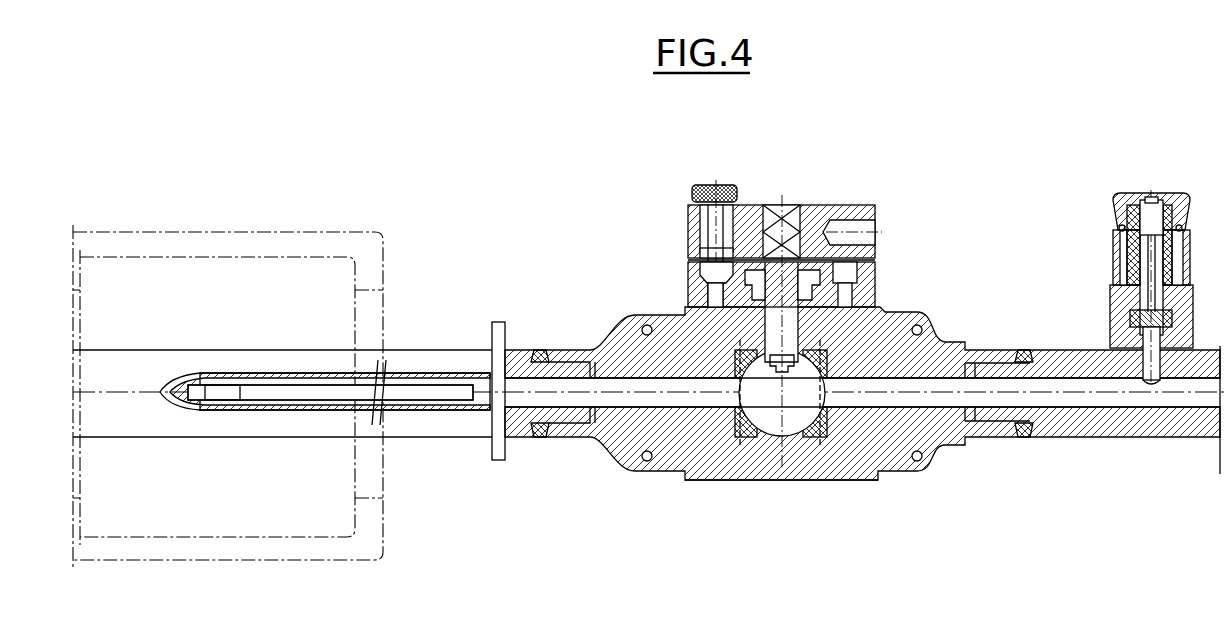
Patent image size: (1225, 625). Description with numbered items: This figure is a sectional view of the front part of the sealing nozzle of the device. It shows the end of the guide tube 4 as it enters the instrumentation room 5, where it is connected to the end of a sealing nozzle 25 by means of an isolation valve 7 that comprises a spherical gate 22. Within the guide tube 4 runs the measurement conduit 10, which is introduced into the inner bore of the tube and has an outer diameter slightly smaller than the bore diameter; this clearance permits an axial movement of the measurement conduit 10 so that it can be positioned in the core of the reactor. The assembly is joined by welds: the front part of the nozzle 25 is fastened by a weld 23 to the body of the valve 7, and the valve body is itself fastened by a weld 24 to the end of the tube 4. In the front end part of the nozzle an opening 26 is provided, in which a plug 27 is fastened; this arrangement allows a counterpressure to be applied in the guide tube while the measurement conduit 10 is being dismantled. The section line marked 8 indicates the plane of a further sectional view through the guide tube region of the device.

The guide tube 4 is at (445, 366).
The instrumentation room 5 is at (862, 412).
The isolation valve 7 is at (700, 486).
The section line 8- 8 is at (433, 230).
The measurement conduit 10 is at (410, 412).
The spherical gate 22 is at (790, 430).
The weld 23 is at (1025, 439).
The weld 24 is at (545, 349).
The sealing nozzle 25 is at (1032, 303).
The opening 26 is at (1135, 368).
The plug 27 is at (1125, 198).